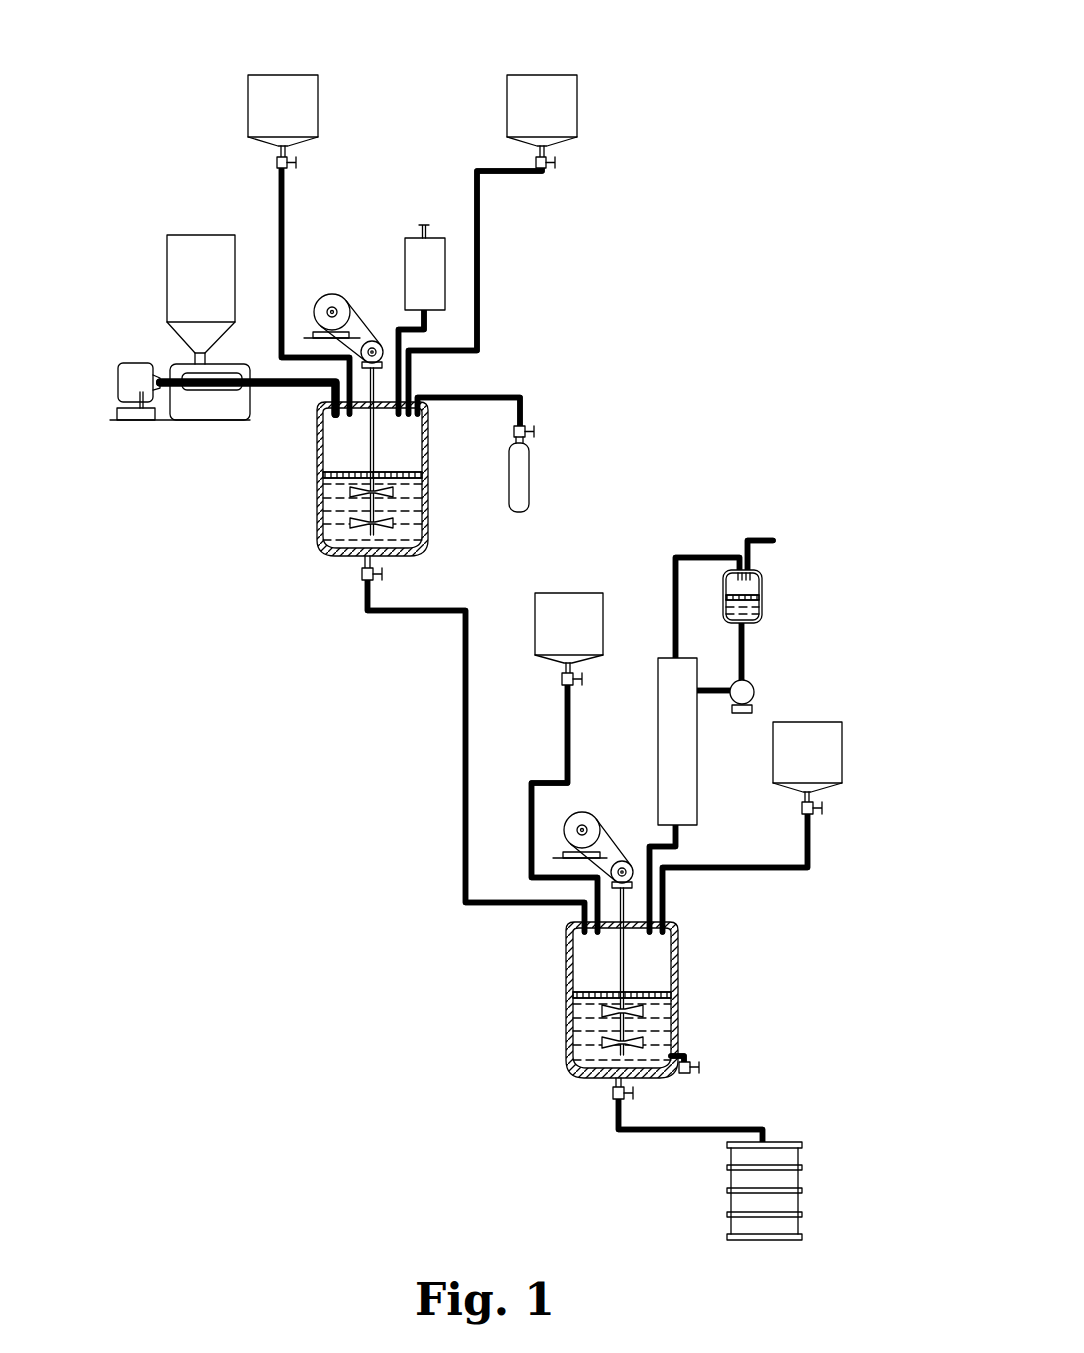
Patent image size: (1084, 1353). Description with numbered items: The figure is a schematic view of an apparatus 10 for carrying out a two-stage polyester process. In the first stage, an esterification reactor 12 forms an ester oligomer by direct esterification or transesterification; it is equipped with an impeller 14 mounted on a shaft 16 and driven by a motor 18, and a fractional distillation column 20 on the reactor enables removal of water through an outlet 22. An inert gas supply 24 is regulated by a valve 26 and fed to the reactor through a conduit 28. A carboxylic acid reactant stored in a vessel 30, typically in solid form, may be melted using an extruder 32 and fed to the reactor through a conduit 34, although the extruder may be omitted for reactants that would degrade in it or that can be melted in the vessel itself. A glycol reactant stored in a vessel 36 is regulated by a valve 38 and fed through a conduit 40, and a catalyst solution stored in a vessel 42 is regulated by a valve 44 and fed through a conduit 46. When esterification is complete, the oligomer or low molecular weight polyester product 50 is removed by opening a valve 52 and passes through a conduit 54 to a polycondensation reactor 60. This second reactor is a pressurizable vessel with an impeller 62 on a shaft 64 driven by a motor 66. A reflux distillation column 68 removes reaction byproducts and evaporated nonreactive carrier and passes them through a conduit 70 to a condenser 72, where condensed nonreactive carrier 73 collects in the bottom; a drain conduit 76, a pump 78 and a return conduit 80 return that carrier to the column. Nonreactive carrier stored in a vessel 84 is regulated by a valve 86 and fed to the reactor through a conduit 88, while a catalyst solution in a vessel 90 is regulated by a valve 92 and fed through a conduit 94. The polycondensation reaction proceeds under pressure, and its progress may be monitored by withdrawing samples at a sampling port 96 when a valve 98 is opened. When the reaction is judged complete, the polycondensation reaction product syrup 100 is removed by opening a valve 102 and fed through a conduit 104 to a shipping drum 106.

The apparatus 10 is at (443, 53).
The esterification reactor 12 is at (317, 515).
The impeller 14 is at (386, 472).
The shaft 16 is at (367, 458).
The motor 18 is at (320, 298).
The fractional distillation column 20 is at (405, 285).
The outlet 22 is at (425, 225).
The inert gas supply 24 is at (529, 480).
The valve 26 is at (530, 431).
The conduit 28 is at (459, 401).
The vessel 30 is at (235, 250).
The extruder 32 is at (220, 375).
The conduit 34 is at (290, 390).
The vessel 36 is at (318, 88).
The valve 38 is at (296, 162).
The conduit 40 is at (284, 198).
The vessel 42 is at (507, 108).
The valve 44 is at (555, 162).
The conduit 46 is at (480, 265).
The low molecular weight polyester product 50 is at (322, 490).
The valve 52 is at (383, 575).
The conduit 54 is at (412, 613).
The polycondensation reactor 60 is at (566, 1030).
The impeller 62 is at (645, 992).
The shaft 64 is at (627, 885).
The motor 66 is at (566, 832).
The reflux distillation column 68 is at (658, 768).
The conduit 70 is at (675, 558).
The condenser 72 is at (762, 588).
The condensed nonreactive carrier 73 is at (757, 606).
The drain conduit 76 is at (744, 650).
The pump 78 is at (755, 695).
The return conduit 80 is at (708, 692).
The vessel 84 is at (535, 605).
The valve 86 is at (580, 680).
The conduit 88 is at (565, 750).
The vessel 90 is at (842, 735).
The valve 92 is at (820, 808).
The conduit 94 is at (810, 855).
The sampling port 96 is at (687, 1075).
The valve 98 is at (700, 1065).
The polycondensation reaction product syrup 100 is at (660, 1020).
The valve 102 is at (630, 1093).
The conduit 104 is at (664, 1132).
The shipping drum 106 is at (800, 1155).